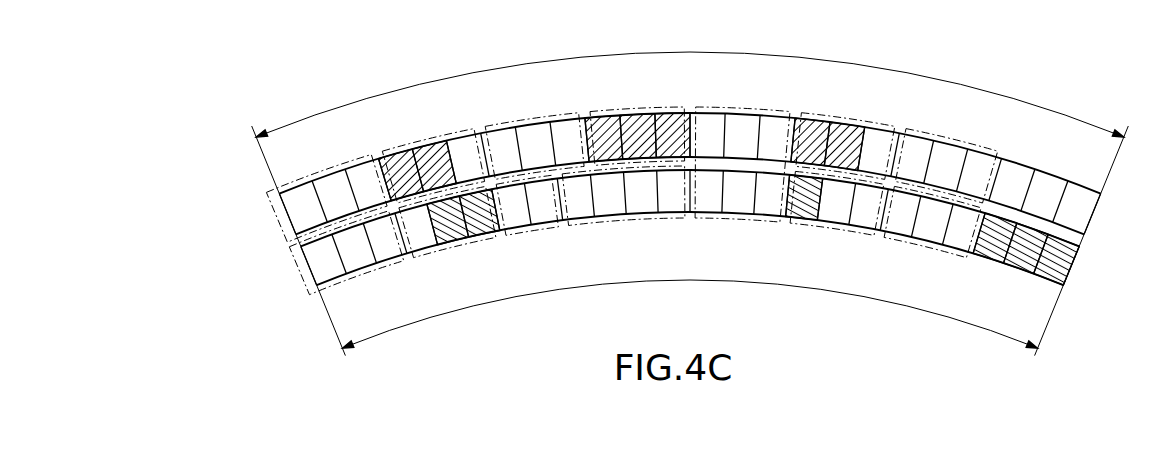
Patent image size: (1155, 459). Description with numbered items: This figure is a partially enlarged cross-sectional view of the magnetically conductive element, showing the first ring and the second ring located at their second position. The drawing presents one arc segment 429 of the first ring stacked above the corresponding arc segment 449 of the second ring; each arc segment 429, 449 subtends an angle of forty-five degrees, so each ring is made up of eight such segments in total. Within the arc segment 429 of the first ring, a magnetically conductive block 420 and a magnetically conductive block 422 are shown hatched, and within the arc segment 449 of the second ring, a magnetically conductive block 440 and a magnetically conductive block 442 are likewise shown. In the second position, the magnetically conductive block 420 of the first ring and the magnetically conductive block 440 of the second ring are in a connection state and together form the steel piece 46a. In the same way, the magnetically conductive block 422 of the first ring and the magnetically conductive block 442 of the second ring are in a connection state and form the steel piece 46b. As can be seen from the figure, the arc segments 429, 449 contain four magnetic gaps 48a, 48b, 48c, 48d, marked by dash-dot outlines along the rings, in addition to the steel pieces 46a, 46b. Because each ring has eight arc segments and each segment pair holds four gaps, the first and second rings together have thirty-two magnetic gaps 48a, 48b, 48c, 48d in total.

The magnetically conductive block 420 is at (432, 160).
The magnetically conductive block 422 is at (847, 135).
The arc segment 429 is at (983, 88).
The magnetically conductive block 440 is at (452, 240).
The magnetically conductive block 442 is at (802, 210).
The arc segment 449 is at (879, 302).
The steel piece 46a is at (404, 143).
The steel piece 46b is at (882, 118).
The magnetic gap 48a is at (357, 278).
The magnetic gap 48b is at (557, 228).
The magnetic gap 48c is at (722, 219).
The magnetic gap 48d is at (932, 248).